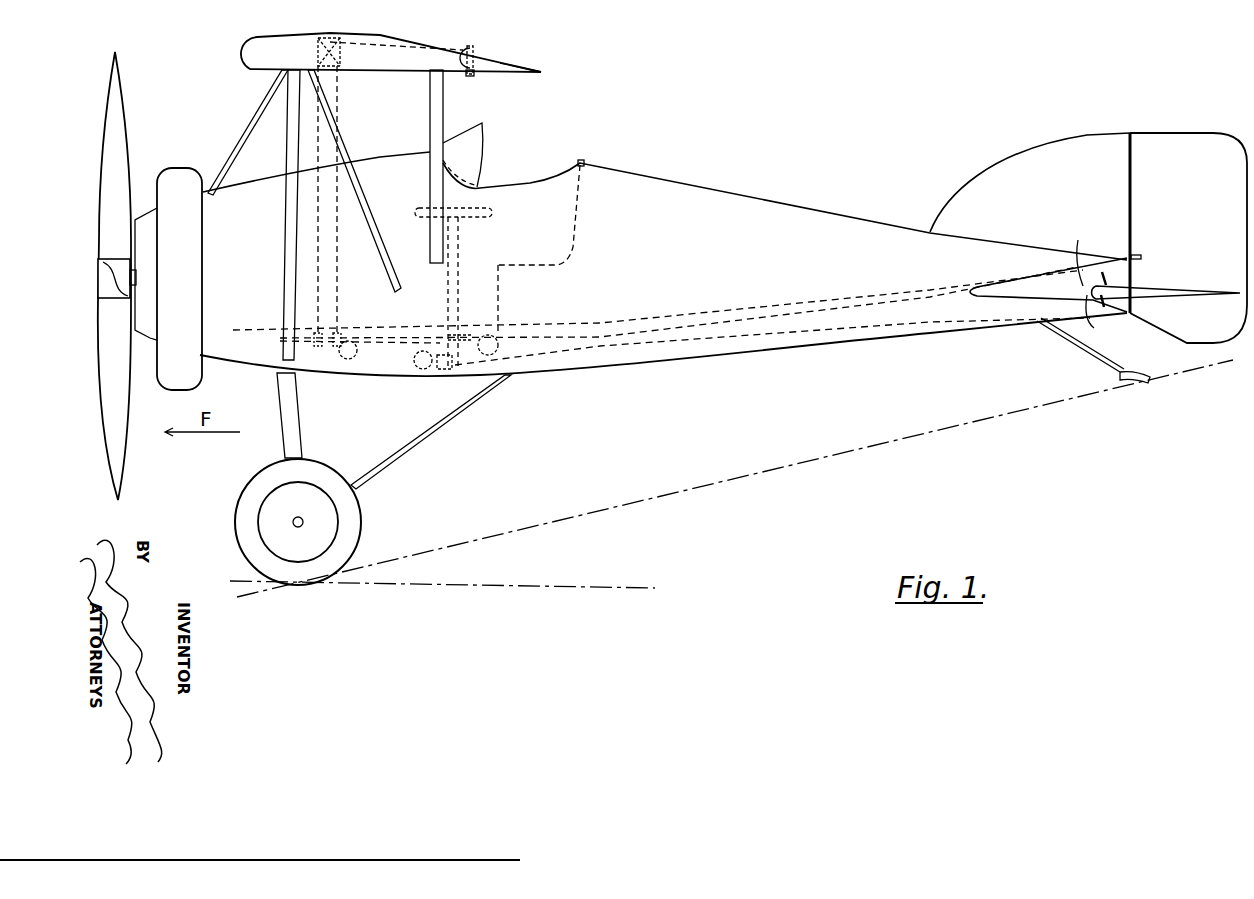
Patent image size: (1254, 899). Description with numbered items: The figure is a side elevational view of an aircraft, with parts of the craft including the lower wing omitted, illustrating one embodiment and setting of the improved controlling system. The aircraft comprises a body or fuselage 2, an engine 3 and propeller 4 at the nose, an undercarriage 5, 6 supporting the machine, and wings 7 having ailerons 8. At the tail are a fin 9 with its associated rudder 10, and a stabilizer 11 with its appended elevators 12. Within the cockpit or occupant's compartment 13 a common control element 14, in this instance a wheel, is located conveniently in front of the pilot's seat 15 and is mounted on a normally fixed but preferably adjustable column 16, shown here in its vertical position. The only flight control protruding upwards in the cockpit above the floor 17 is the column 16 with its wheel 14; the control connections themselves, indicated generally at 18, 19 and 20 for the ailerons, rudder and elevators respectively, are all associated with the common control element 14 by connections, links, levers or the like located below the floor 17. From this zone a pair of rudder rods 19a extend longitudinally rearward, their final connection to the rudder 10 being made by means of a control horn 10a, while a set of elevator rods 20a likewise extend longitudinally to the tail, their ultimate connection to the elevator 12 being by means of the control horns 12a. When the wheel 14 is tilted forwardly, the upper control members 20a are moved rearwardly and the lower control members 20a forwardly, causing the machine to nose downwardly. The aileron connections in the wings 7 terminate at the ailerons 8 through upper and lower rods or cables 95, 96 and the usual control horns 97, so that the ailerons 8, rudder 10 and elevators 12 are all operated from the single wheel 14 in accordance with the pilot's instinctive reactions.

The body or fuselage 2 is at (631, 249).
The engine 3 is at (192, 253).
The propeller 4 is at (118, 118).
The undercarriage 5 is at (373, 479).
The undercarriage 6 is at (1093, 350).
The wings 7 is at (268, 48).
The ailerons 8 is at (497, 68).
The fin 9 is at (1030, 182).
The rudder 10 is at (1188, 238).
The control horn 10a is at (1141, 257).
The stabilizer 11 is at (1000, 290).
The elevators 12 is at (1188, 292).
The control horns 12a is at (1108, 278).
The cockpit or occupant's compartment 13 is at (552, 197).
The common control element 14 is at (480, 216).
The pilot's seat 15 is at (498, 300).
The column 16 is at (447, 298).
The floor 17 is at (347, 328).
The control connections for ailerons 18 is at (348, 350).
The control connections for rudder 19 is at (433, 360).
The rudder rods 19a is at (1092, 259).
The control connections for elevators 20 is at (473, 345).
The elevator rods 20a is at (1104, 318).
The upper rod or cable 95 is at (466, 46).
The lower rod or cable 96 is at (458, 76).
The control horns 97 is at (473, 50).